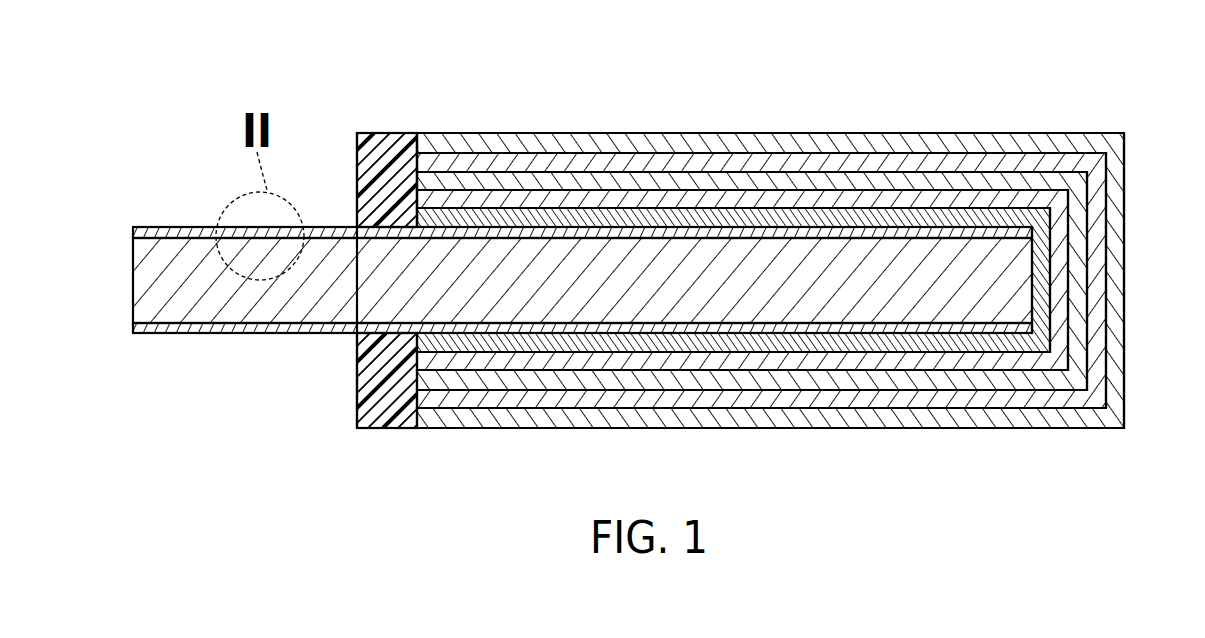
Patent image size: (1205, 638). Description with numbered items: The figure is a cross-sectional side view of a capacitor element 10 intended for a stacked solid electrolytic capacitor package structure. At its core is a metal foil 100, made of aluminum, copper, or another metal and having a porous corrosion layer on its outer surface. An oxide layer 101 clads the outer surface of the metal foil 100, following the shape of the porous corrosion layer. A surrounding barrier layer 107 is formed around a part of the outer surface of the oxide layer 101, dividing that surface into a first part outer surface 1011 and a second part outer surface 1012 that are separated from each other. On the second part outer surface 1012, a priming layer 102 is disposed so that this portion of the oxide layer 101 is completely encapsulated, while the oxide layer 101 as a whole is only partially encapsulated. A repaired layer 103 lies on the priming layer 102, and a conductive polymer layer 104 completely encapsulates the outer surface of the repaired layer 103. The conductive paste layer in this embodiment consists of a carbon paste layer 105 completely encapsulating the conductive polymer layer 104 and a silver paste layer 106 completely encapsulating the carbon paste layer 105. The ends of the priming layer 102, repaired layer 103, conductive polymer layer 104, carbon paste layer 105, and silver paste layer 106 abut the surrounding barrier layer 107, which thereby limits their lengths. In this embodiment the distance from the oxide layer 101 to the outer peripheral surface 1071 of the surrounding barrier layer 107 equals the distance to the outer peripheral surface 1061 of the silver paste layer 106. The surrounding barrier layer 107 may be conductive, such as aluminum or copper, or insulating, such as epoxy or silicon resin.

The capacitor element 10 is at (150, 91).
The metal foil 100 is at (140, 282).
The oxide layer 101 is at (180, 228).
The first part outer surface 1011 is at (260, 335).
The second part outer surface 1012 is at (632, 334).
The priming layer 102 is at (1043, 235).
The repaired layer 103 is at (1062, 203).
The conductive polymer layer 104 is at (1070, 178).
The carbon paste layer 105 is at (1097, 262).
The silver paste layer 106 is at (535, 137).
The outer peripheral surface of the silver paste layer 1061 is at (582, 133).
The surrounding barrier layer 107 is at (383, 137).
The outer peripheral surface of the surrounding barrier layer 1071 is at (405, 133).